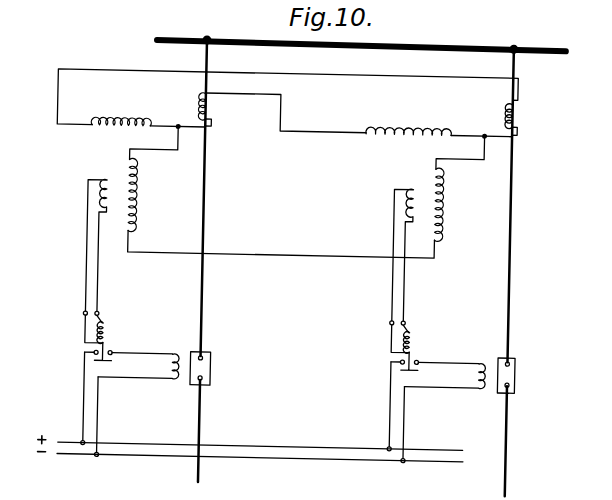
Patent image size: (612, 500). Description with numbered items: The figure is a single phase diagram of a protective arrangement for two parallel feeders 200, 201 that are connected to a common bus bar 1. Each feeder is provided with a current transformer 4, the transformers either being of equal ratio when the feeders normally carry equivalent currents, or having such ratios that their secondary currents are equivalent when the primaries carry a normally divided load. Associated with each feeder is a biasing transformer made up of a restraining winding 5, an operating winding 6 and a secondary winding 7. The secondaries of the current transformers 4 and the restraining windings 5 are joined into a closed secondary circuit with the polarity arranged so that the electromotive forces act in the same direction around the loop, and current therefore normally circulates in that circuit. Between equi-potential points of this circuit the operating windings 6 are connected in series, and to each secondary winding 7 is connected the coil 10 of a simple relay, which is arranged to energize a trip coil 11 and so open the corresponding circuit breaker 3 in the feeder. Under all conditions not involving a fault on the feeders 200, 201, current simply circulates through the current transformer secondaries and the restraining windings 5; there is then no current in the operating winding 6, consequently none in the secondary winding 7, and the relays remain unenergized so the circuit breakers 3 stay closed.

The bus bar 1 is at (474, 28).
The circuit breaker 3 is at (226, 365).
The current transformer 4 is at (203, 97).
The restraining winding 5 is at (126, 123).
The operating winding 6 is at (140, 192).
The secondary winding 7 is at (110, 181).
The relay coil 10 is at (112, 334).
The trip coil 11 is at (184, 354).
The feeder 200 is at (209, 212).
The feeder 201 is at (516, 187).